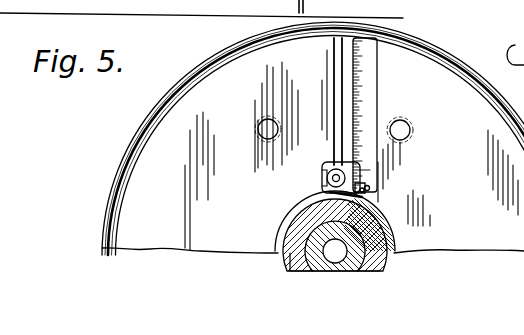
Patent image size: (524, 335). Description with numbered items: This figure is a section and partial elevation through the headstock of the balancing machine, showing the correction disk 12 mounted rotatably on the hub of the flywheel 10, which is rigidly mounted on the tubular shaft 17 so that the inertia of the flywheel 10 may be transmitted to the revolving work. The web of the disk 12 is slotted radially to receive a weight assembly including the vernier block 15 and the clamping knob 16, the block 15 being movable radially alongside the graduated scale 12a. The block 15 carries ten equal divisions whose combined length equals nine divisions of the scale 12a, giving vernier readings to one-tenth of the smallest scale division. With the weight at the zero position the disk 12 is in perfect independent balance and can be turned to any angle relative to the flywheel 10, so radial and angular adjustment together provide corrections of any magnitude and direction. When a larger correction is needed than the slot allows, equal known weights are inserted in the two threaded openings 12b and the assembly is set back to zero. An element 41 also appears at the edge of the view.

The base housing 10 is at (382, 223).
The semicircular disc plate 12 is at (313, 138).
The graduated scale 12a is at (377, 82).
The holes in disc 12b is at (420, 128).
The clamp 15 is at (328, 169).
The roller bracket 16 is at (324, 184).
The pivot shaft 17 is at (334, 235).
The fitting 41 is at (523, 40).